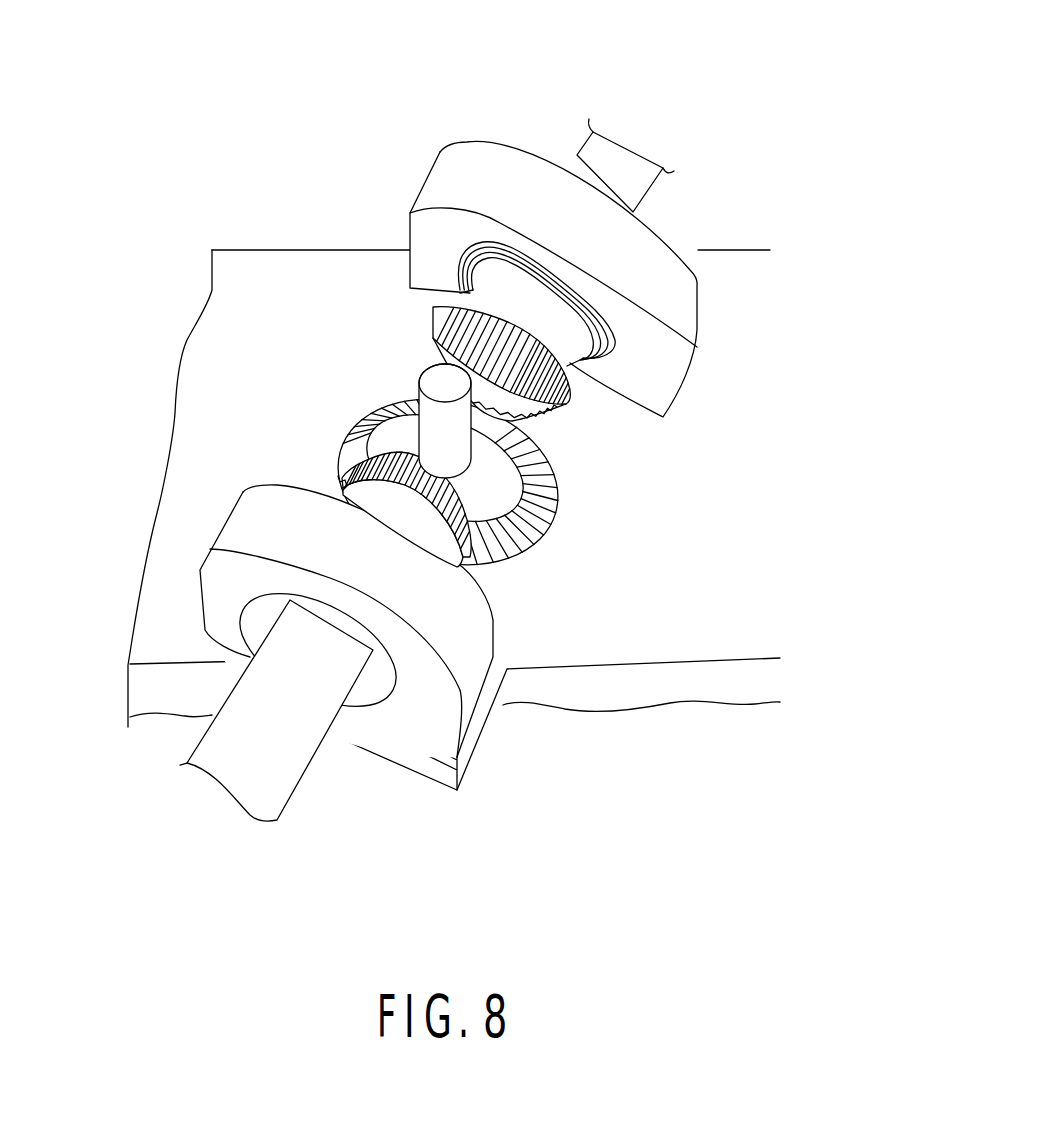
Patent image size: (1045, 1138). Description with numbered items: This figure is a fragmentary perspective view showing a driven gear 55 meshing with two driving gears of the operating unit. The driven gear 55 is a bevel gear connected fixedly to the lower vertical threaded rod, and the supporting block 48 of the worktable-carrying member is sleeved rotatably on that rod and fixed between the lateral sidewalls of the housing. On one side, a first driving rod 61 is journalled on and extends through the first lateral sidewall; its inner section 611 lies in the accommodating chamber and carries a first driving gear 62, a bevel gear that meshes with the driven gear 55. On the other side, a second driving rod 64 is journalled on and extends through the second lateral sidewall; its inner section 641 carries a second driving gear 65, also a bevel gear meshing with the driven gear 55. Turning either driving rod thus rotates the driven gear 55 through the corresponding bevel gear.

The supporting block 48 is at (227, 297).
The driven gear 55 is at (342, 440).
The first driving rod 61 is at (313, 758).
The inner section 611 is at (341, 490).
The first driving gear 62 is at (338, 478).
The second driving rod 64 is at (577, 155).
The inner section 641 is at (410, 213).
The second driving gear 65 is at (433, 348).